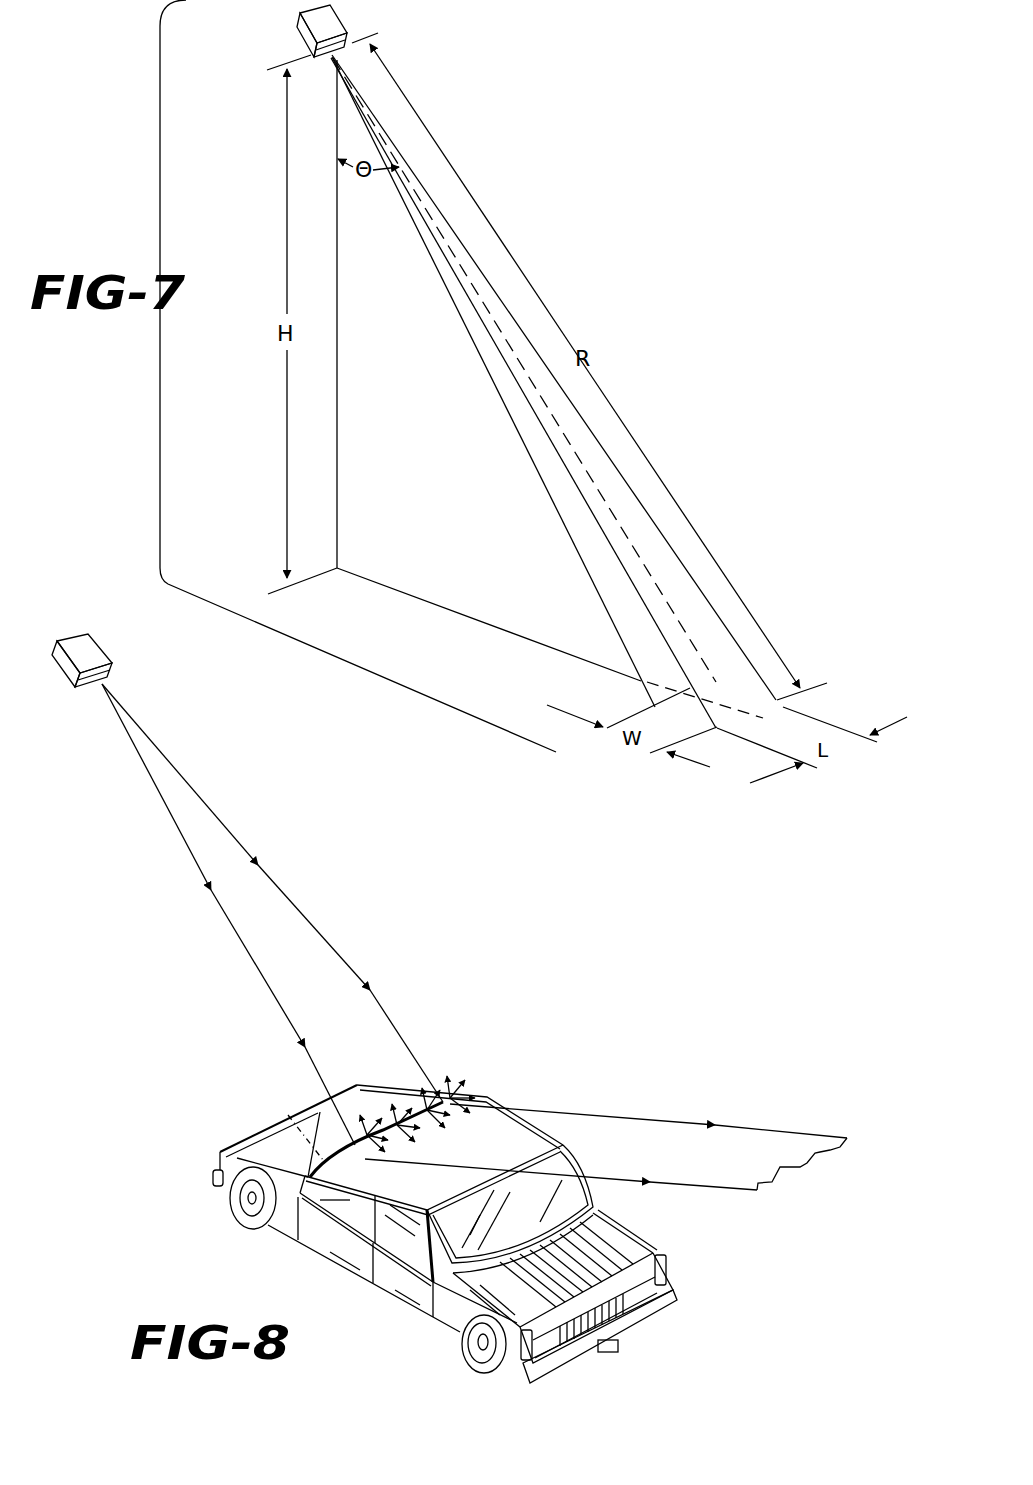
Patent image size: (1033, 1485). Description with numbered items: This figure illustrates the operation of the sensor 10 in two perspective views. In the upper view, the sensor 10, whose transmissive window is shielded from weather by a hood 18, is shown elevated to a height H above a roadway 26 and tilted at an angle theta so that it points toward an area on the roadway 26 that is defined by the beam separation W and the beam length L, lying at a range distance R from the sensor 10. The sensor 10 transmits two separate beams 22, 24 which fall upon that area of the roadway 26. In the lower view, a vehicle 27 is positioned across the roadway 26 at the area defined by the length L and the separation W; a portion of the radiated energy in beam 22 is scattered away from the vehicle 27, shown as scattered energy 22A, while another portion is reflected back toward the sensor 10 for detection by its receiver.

In FIG. 7, the sensor 10 is at (287, 17).
In FIG. 8, the sensor 10 is at (128, 654).
In FIG. 7, the hood 18 is at (367, 27).
In FIG. 7, the beam 22 is at (671, 547).
In FIG. 8, the beam 22 is at (267, 997).
In FIG. 7, the beam 24 is at (551, 497).
In FIG. 7, the roadway 26 is at (484, 651).
In FIG. 8, the reflected beam 22A is at (783, 1143).
In FIG. 8, the vehicle 27 is at (358, 1258).